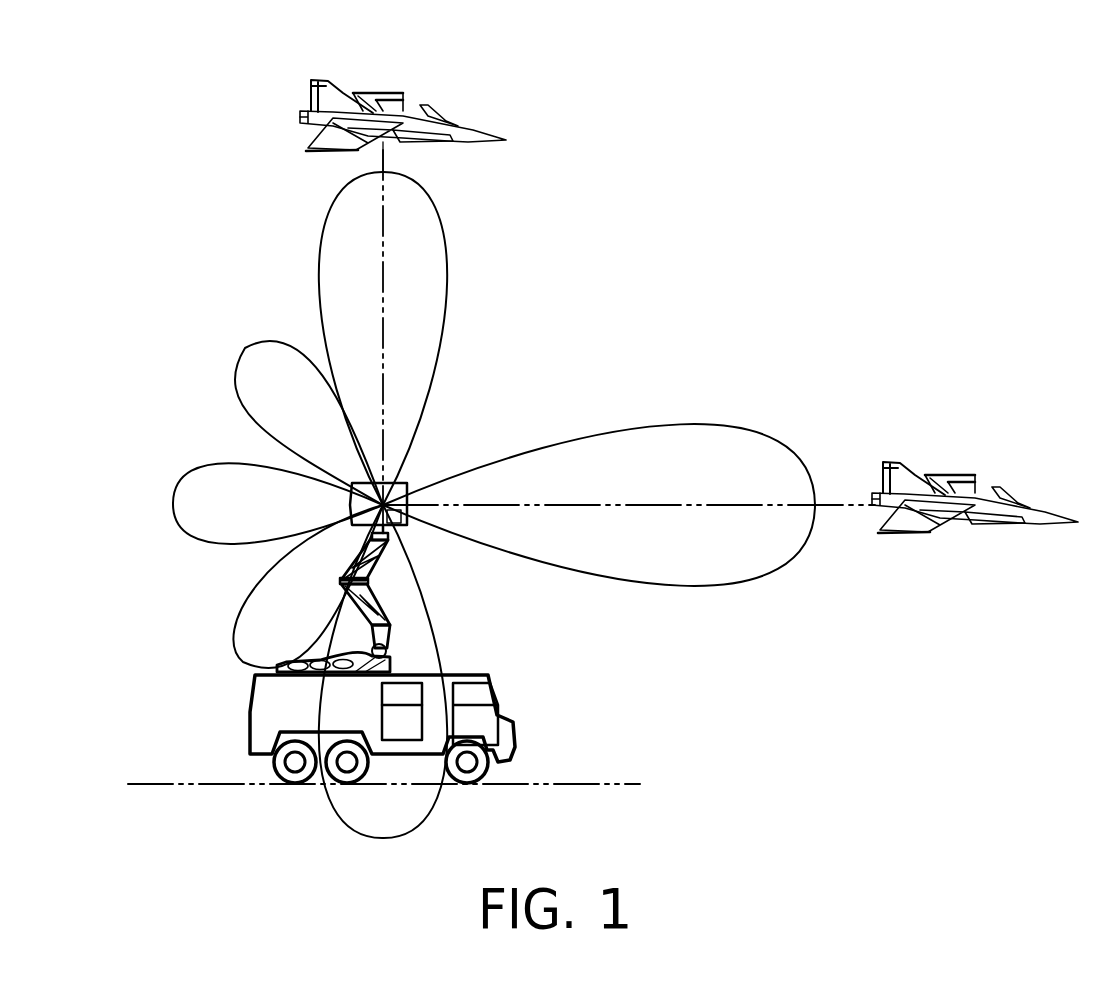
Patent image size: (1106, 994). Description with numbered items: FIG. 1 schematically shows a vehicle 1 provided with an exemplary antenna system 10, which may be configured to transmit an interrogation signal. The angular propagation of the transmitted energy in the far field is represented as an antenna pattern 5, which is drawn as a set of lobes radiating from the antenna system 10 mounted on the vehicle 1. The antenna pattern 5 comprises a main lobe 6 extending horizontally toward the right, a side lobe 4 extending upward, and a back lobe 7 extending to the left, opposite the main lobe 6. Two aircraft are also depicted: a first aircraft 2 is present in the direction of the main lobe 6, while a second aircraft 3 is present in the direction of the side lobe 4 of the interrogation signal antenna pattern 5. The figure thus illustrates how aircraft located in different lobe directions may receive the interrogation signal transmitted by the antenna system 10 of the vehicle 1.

The vehicle 1 is at (190, 654).
The first aircraft 2 is at (1020, 456).
The second aircraft 3 is at (468, 86).
The side lobe 4 is at (445, 265).
The antenna pattern 5 is at (768, 612).
The main lobe 6 is at (728, 425).
The back lobe 7 is at (175, 487).
The antenna system 10 is at (422, 542).